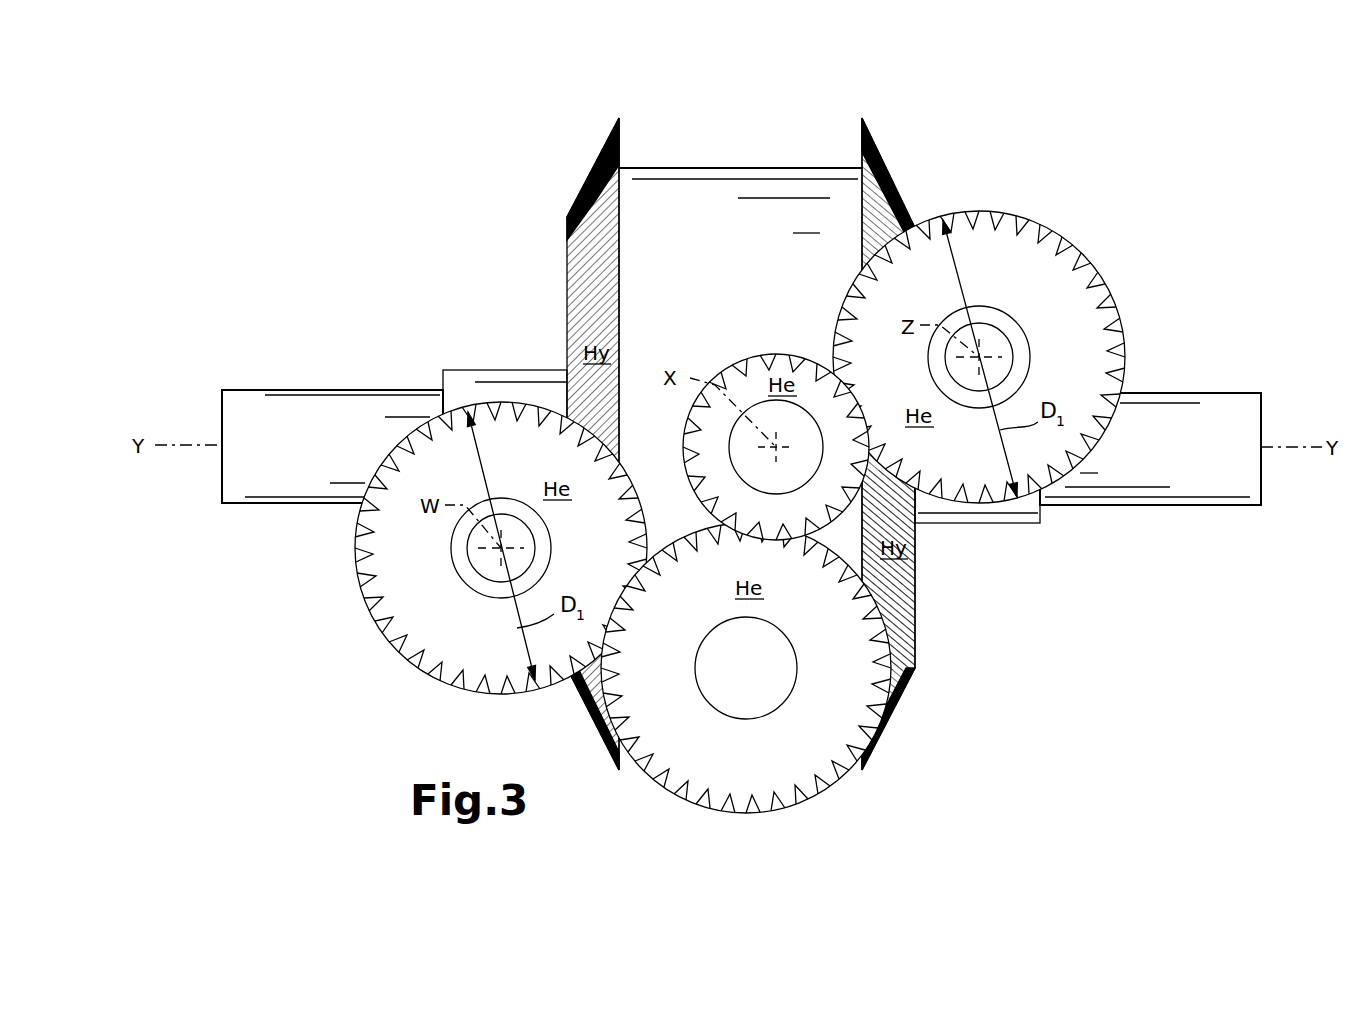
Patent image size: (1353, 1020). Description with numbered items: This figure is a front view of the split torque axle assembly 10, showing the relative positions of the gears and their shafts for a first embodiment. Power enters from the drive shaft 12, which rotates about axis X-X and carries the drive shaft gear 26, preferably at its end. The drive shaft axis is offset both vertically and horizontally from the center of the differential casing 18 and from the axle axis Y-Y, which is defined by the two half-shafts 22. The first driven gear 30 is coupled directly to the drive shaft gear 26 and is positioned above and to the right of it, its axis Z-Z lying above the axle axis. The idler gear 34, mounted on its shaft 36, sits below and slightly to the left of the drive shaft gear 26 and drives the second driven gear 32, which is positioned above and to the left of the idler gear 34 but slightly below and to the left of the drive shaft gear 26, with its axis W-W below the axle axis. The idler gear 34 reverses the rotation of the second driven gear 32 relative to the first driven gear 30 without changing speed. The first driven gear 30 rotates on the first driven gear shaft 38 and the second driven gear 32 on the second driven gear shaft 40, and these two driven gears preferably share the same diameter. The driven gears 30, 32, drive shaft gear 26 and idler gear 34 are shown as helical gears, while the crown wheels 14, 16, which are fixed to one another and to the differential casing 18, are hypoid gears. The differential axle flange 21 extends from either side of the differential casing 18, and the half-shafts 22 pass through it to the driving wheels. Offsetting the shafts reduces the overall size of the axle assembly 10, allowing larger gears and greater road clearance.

The split torque axle assembly 10 is at (422, 92).
The drive shaft 12 is at (868, 462).
The first crown wheel 14 is at (890, 195).
The second crown wheel 16 is at (588, 272).
The differential casing 18 is at (722, 205).
The differential axle flange 21 is at (495, 385).
The half-shafts 22 is at (328, 420).
The drive shaft gear 26 is at (752, 385).
The first driven gear 30 is at (1070, 312).
The second driven gear 32 is at (438, 623).
The idler gear 34 is at (690, 752).
The shaft 36 is at (765, 695).
The first driven gear shaft 38 is at (1012, 326).
The second driven gear shaft 40 is at (493, 580).